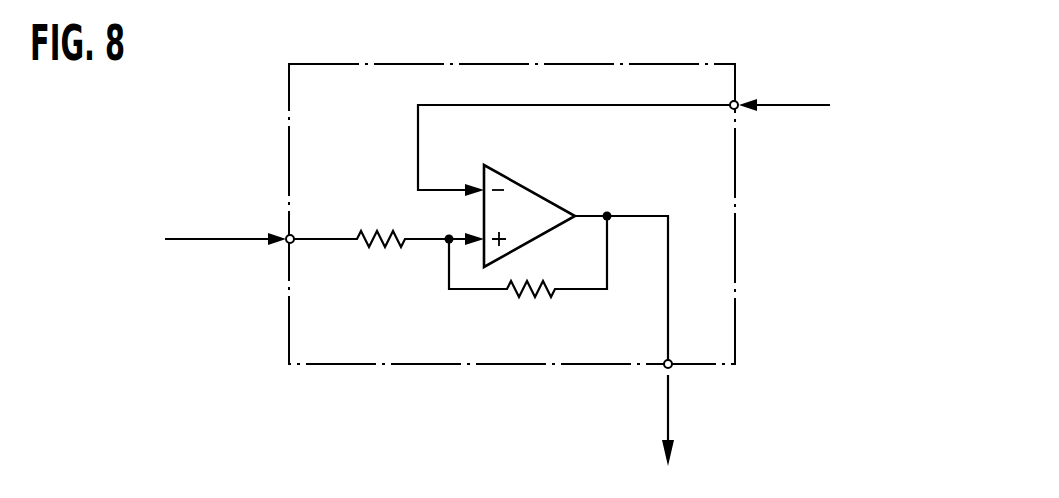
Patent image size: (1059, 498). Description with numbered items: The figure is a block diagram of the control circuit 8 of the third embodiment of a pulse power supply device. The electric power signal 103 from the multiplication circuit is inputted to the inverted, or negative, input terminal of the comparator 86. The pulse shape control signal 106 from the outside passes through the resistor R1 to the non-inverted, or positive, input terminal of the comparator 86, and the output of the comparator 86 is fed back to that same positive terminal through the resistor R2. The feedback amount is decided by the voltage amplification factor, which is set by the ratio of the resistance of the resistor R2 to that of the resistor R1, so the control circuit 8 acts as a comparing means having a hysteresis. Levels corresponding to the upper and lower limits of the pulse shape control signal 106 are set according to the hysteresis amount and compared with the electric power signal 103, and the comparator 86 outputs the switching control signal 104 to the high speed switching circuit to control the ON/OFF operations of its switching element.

The control circuit 8 is at (596, 63).
The comparator 86 is at (513, 178).
The electric power signal 103 is at (800, 105).
The switching control signal 104 is at (670, 408).
The pulse shape control signal 106 is at (198, 238).
The resistor R1 is at (380, 262).
The resistor R2 is at (528, 279).